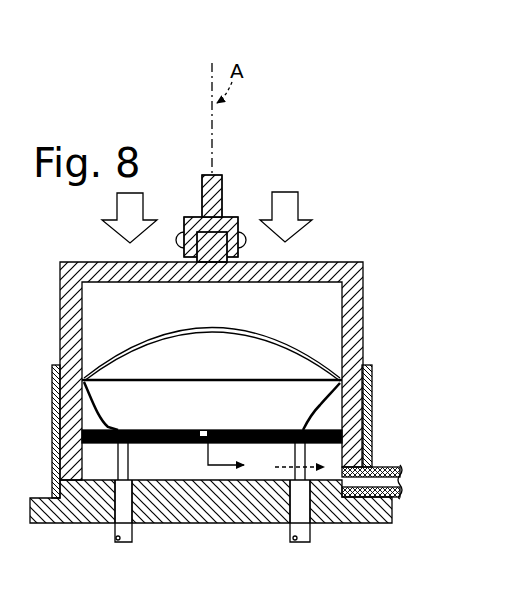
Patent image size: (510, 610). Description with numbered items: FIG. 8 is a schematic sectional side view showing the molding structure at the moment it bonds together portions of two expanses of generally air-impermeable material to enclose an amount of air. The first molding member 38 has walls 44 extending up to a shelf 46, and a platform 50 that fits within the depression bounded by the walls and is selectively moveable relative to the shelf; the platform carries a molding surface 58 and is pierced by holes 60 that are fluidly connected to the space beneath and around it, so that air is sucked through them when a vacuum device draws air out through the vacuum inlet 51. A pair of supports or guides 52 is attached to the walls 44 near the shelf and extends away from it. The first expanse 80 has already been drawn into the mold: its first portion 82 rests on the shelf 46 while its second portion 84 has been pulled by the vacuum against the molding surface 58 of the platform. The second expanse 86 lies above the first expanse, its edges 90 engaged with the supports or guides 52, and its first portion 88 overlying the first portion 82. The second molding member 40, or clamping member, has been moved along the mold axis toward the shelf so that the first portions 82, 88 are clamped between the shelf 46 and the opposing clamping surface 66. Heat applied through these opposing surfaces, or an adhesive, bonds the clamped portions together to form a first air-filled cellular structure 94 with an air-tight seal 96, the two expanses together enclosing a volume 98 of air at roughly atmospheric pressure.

The first molding member 38 is at (68, 537).
The second molding member 40 is at (50, 286).
The walls 44 is at (72, 442).
The shelf 46 is at (68, 376).
The platform 50 is at (113, 445).
The vacuum inlet 51 is at (401, 503).
The supports or guides 52 is at (64, 374).
The molding surface 58 is at (96, 425).
The holes 60 is at (204, 447).
The clamping surface 66 is at (84, 376).
The first expanse 80 is at (350, 440).
The first portion 82 is at (78, 396).
The second portion 84 is at (160, 430).
The second expanse 86 is at (190, 325).
The first portion 88 is at (68, 377).
The edges 90 is at (66, 381).
The first air-filled cellular structure 94 is at (221, 321).
The air-tight seal 96 is at (103, 378).
The volume 98 is at (228, 347).